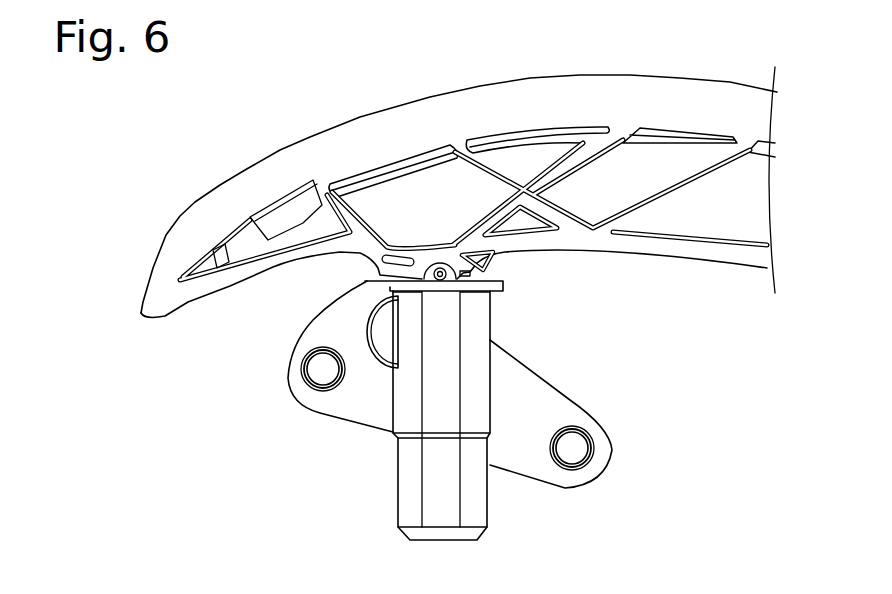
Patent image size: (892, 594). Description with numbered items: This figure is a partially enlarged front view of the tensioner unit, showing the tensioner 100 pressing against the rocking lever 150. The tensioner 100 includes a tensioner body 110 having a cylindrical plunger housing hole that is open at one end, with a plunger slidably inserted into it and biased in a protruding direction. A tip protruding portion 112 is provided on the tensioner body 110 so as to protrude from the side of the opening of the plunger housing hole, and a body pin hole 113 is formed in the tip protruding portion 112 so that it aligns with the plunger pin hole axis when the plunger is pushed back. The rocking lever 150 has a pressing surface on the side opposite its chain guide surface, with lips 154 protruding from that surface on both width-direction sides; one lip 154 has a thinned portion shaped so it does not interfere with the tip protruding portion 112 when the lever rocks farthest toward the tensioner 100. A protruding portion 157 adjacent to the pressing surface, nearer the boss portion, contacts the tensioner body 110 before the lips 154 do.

The tensioner 100 is at (293, 412).
The tensioner body 110 is at (437, 373).
The tip protruding portion 112 is at (443, 277).
The body pin hole 113 is at (443, 280).
The rocking lever 150 is at (647, 263).
The lip 154 is at (413, 262).
The protruding portion 157 is at (493, 273).